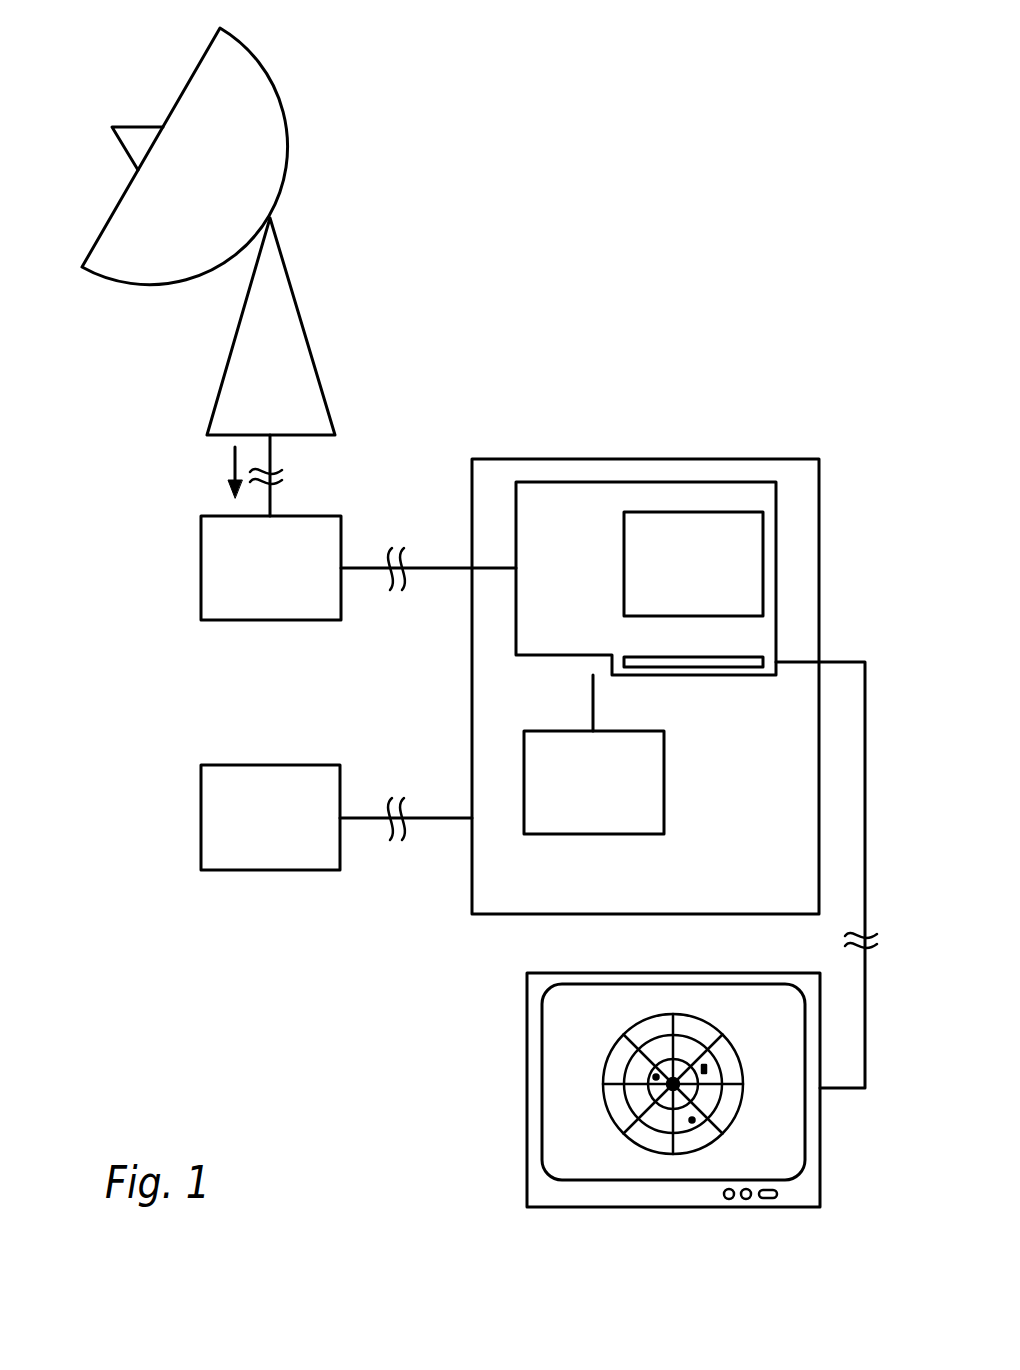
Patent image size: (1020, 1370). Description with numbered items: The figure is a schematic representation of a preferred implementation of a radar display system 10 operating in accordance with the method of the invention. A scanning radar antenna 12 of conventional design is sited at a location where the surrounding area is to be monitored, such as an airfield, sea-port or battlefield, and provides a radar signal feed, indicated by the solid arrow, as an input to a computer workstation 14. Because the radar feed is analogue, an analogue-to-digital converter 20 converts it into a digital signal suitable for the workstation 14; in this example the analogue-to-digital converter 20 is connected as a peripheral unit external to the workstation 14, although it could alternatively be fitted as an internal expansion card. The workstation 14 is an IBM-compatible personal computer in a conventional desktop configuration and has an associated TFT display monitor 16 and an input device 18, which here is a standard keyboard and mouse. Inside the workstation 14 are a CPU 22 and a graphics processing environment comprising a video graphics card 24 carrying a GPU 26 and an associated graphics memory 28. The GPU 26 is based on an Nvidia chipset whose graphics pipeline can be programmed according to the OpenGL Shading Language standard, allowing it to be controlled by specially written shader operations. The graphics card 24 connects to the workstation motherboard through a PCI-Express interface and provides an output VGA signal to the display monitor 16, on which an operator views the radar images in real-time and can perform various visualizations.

The radar display system 10 is at (788, 243).
The scanning radar antenna 12 is at (268, 66).
The computer workstation 14 is at (456, 939).
The TFT display monitor 16 is at (527, 1037).
The input device 18 is at (289, 833).
The analogue-to-digital converter 20 is at (289, 583).
The CPU 22 is at (612, 797).
The video graphics card 24 is at (565, 482).
The GPU 26 is at (763, 537).
The graphics memory 28 is at (735, 657).